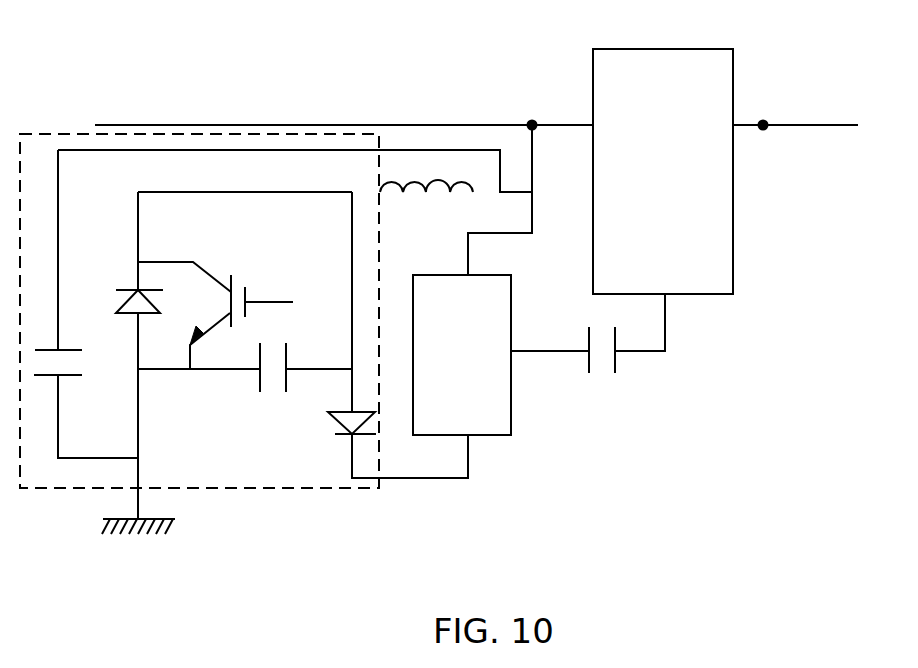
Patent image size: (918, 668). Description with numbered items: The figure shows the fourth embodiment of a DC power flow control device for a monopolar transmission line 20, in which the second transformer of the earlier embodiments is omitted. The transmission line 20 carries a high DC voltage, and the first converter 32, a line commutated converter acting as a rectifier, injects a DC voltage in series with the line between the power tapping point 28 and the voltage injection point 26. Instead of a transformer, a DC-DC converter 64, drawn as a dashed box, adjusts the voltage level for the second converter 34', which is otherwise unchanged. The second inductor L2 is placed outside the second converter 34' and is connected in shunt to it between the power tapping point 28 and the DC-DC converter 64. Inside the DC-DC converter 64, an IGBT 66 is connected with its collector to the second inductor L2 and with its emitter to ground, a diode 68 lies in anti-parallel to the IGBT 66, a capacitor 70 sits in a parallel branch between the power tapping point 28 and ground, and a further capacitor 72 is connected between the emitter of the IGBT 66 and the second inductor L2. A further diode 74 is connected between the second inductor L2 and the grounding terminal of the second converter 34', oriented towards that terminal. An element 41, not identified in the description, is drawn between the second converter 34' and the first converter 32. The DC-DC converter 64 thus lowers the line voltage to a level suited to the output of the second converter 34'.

The transmission line 20 is at (408, 125).
The voltage injection point 26 is at (763, 125).
The power tapping point 28 is at (532, 125).
The first converter 32 is at (663, 171).
The second converter 34' is at (462, 355).
The capacitor 41 is at (588, 358).
The second inductor L2 is at (426, 208).
The DC-DC converter 64 is at (313, 490).
The IGBT 66 is at (215, 302).
The diode 68 is at (117, 308).
The capacitor 70 is at (80, 371).
The further capacitor 72 is at (271, 388).
The further diode 74 is at (334, 433).